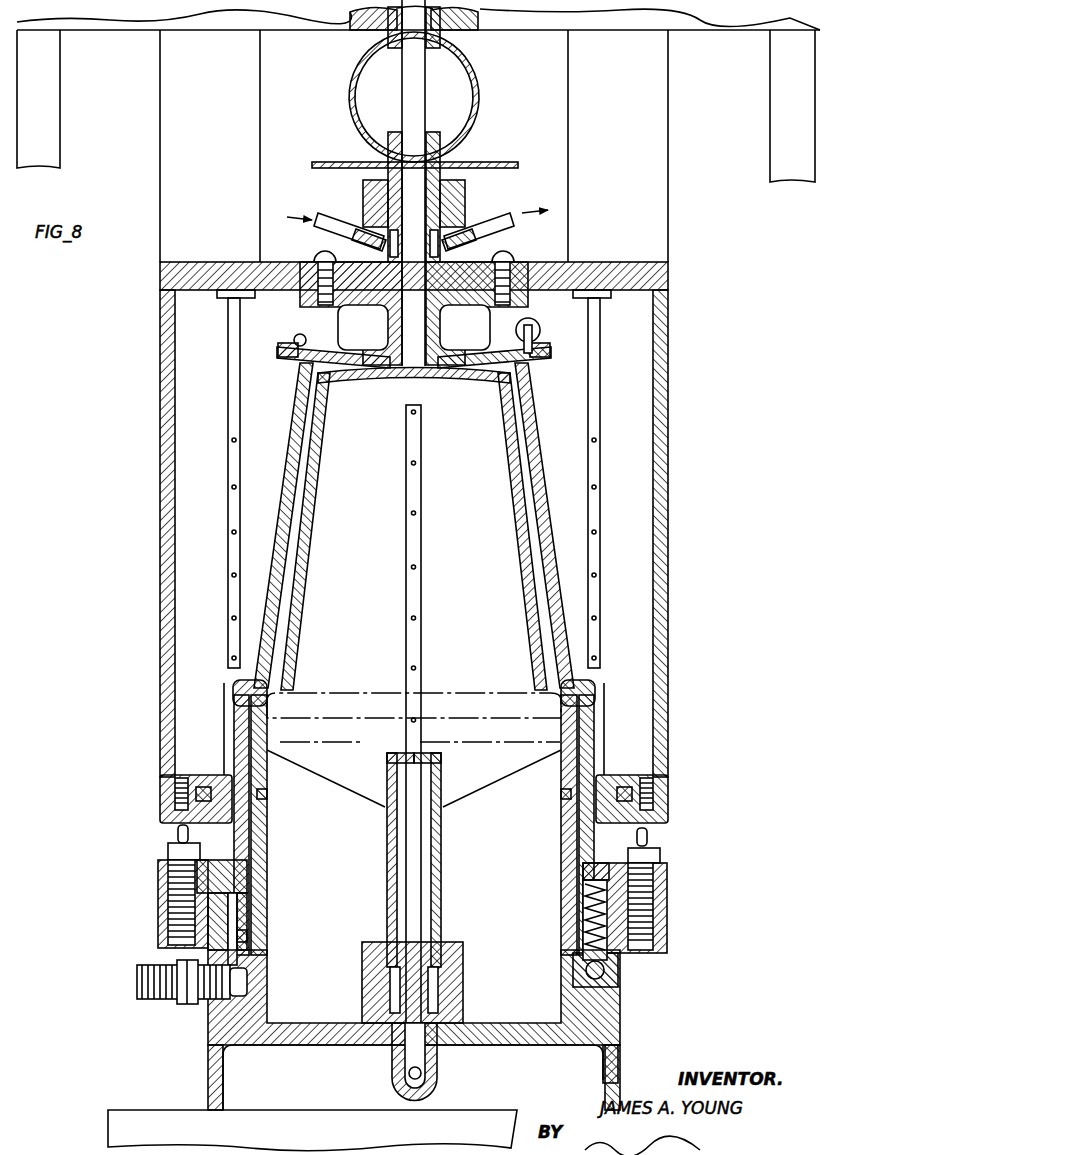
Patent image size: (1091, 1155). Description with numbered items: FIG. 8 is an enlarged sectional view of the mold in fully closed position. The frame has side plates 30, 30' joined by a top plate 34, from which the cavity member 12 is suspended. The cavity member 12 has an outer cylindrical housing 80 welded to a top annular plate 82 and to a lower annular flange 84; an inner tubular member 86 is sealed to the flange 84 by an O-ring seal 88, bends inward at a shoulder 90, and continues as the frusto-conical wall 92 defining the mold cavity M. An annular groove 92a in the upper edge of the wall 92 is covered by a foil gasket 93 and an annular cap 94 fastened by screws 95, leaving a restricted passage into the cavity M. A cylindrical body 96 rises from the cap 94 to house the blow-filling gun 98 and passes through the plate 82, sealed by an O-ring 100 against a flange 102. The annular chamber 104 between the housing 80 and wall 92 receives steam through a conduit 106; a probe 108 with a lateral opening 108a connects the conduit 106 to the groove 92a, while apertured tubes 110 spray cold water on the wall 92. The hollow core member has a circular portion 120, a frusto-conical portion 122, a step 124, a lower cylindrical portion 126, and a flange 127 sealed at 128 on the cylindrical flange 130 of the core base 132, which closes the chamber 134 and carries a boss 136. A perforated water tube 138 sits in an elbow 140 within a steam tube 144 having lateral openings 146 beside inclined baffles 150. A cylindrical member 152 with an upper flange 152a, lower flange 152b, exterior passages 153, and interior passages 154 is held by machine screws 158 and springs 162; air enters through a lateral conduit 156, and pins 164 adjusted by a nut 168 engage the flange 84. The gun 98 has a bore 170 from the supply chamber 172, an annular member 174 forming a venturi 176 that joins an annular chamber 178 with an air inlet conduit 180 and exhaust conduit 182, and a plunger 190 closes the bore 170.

The cavity member 12 is at (125, 422).
The side plate 30 is at (760, 106).
The side plate 30' is at (61, 99).
The top plate 34 is at (330, 20).
The outer cylindrical housing 80 is at (168, 550).
The top annular plate 82 is at (160, 272).
The annular flange 84 is at (162, 808).
The inner tubular member 86 is at (228, 718).
The O-ring seal 88 is at (265, 794).
The shoulder 90 is at (240, 683).
The frusto-conical wall 92 is at (283, 590).
The annular groove 92a is at (300, 360).
The gasket 93 is at (280, 350).
The annular cap 94 is at (340, 350).
The screws 95 is at (298, 340).
The cylindrical body 96 is at (362, 185).
The blow-filling gun 98 is at (468, 152).
The O-ring 100 is at (332, 305).
The flange 102 is at (490, 330).
The annular chamber 104 is at (200, 475).
The conduit 106 is at (532, 322).
The probe 108 is at (475, 372).
The lateral opening 108a is at (520, 340).
The apertured tubes 110 is at (232, 415).
The uppermost circular portion 120 is at (398, 385).
The frusto-conical portion 122 is at (310, 478).
The step or shoulder 124 is at (285, 700).
The lower cylindrical portion 126 is at (262, 858).
The flange 127 is at (222, 915).
The seal 128 is at (255, 932).
The cylindrical flange 130 is at (245, 1005).
The core member base 132 is at (355, 1048).
The chamber 134 is at (510, 628).
The central boss 136 is at (362, 955).
The tube 138 is at (423, 503).
The elbow 140 is at (440, 1070).
The metal tube 144 is at (428, 832).
The lateral openings 146 is at (388, 760).
The inclined baffles 150 is at (335, 790).
The cylindrical member 152 is at (257, 820).
The inwardly directed flange 152a is at (250, 685).
The outwardly directed flange 152b is at (230, 876).
The exterior passages 153 is at (245, 742).
The interior passages 154 is at (255, 760).
The lateral conduit 156 is at (168, 1003).
The machine screws 158 is at (583, 896).
The spring 162 is at (580, 915).
The pins 164 is at (176, 832).
The nut 168 is at (166, 853).
The central bore 170 is at (450, 190).
The supply chamber 172 is at (450, 90).
The annular member 174 is at (455, 208).
The annular venturi 176 is at (470, 240).
The annular chamber 178 is at (362, 245).
The air inlet conduit 180 is at (335, 218).
The air exhaust conduit 182 is at (515, 215).
The plunger 190 is at (400, 130).
The mold cavity M is at (300, 512).